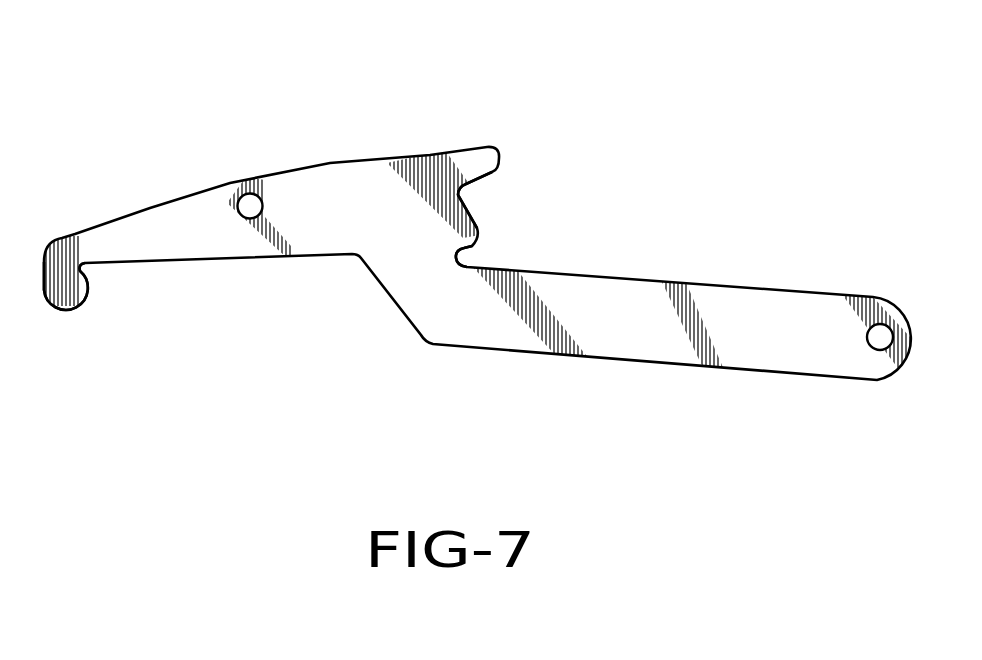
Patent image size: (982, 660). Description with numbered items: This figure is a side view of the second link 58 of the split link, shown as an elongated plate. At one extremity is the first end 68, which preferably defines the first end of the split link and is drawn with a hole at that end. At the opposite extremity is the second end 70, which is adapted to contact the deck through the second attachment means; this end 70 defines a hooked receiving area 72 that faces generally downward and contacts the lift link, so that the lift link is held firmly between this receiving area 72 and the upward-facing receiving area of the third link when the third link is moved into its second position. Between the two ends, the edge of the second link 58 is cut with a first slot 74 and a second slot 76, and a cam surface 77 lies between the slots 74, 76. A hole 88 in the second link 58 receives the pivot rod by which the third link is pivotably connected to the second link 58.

The second link 58 is at (203, 158).
The hole 88 is at (253, 194).
The first end 68 is at (832, 303).
The second slot 76 is at (468, 184).
The cam surface 77 is at (466, 210).
The first slot 74 is at (483, 250).
The receiving area 72 is at (90, 274).
The second end 70 is at (52, 292).